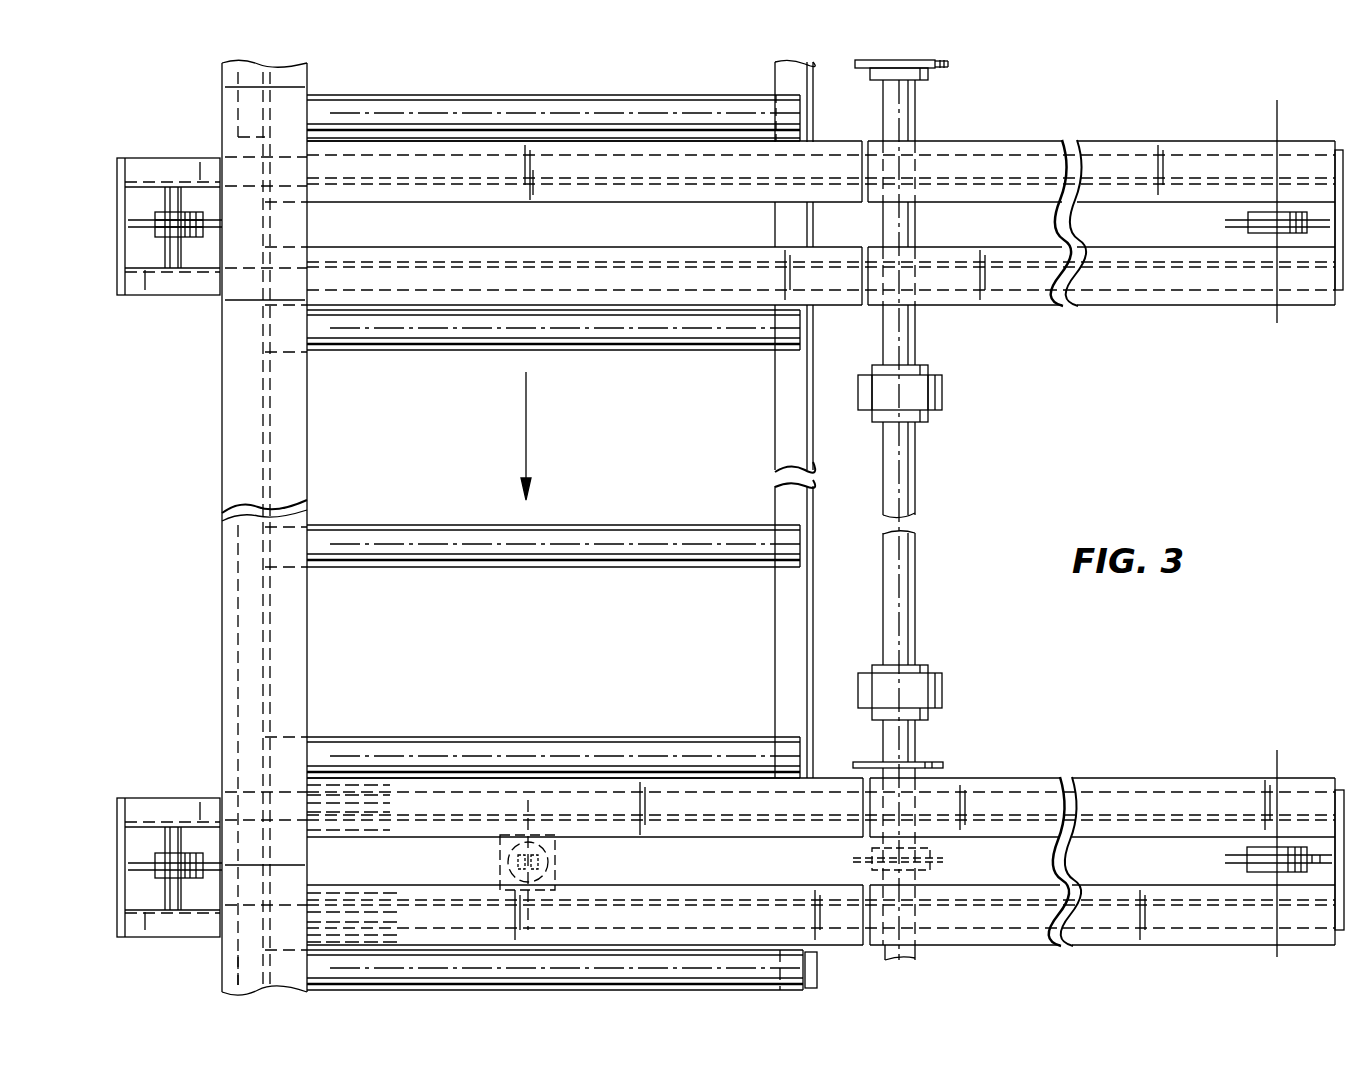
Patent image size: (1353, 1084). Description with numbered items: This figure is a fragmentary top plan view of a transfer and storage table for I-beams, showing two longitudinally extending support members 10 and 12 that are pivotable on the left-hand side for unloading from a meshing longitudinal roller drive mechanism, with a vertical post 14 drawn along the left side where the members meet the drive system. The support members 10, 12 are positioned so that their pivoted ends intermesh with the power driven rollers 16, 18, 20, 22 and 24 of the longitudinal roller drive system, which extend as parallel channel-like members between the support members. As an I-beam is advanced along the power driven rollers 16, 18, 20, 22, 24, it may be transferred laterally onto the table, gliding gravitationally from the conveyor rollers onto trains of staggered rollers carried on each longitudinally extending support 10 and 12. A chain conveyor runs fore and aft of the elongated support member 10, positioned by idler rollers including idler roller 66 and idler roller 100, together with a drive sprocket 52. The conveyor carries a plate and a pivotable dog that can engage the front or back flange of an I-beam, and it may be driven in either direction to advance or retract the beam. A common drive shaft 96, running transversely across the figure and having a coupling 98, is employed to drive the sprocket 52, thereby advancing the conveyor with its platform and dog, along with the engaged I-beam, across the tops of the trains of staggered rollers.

The longitudinally extending support member 10 is at (137, 805).
The longitudinally extending support member 12 is at (175, 290).
The vertical post 14 is at (236, 690).
The power driven roller 16 is at (795, 992).
The power driven roller 18 is at (747, 741).
The power driven roller 20 is at (705, 525).
The power driven roller 22 is at (738, 347).
The power driven roller 24 is at (728, 100).
The drive sprocket 52 is at (932, 857).
The idler roller 66 is at (1235, 862).
The common drive shaft 96 is at (917, 607).
The coupling 98 is at (943, 692).
The idler roller 100 is at (155, 870).